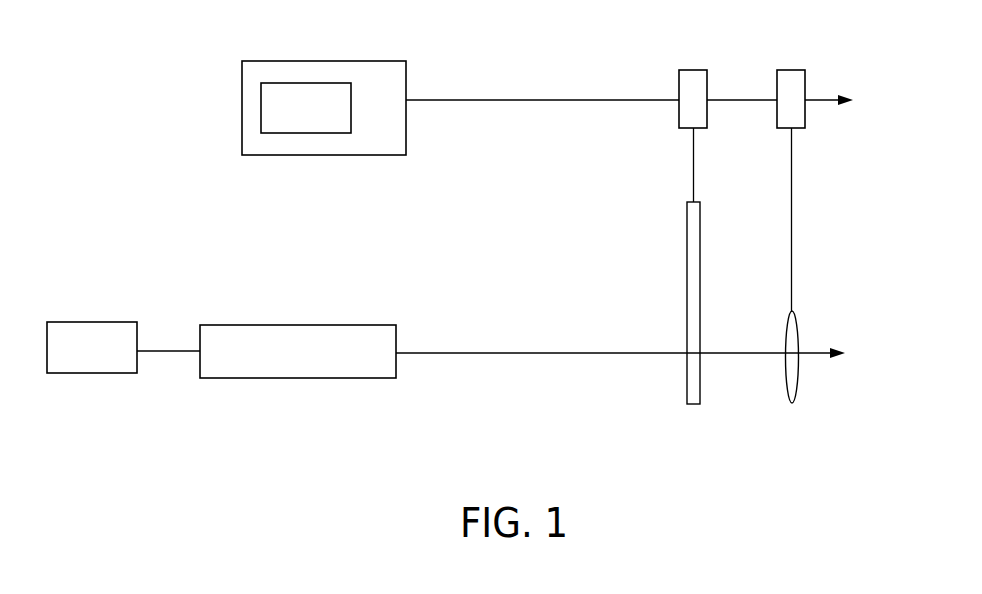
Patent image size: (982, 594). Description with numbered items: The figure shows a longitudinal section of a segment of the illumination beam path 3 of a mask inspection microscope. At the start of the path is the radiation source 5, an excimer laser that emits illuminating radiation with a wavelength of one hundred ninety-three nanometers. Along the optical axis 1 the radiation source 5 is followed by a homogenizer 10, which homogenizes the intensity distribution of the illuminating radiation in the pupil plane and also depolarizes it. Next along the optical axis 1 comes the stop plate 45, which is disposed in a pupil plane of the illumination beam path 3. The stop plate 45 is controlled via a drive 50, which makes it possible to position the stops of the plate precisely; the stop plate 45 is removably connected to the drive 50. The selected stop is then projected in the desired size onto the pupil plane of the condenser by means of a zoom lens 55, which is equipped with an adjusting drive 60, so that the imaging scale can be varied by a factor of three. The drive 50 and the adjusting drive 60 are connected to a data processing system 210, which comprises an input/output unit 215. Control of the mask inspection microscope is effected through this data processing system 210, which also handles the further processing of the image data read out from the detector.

The optical axis 1 is at (466, 355).
The illumination beam path 3 is at (778, 490).
The radiation source 5 is at (83, 322).
The homogenizer 10 is at (247, 325).
The stop plate 45 is at (692, 405).
The drive 50 is at (693, 70).
The zoom lens 55 is at (792, 404).
The adjusting drive 60 is at (791, 70).
The data processing system 210 is at (340, 61).
The input/output unit 215 is at (327, 134).